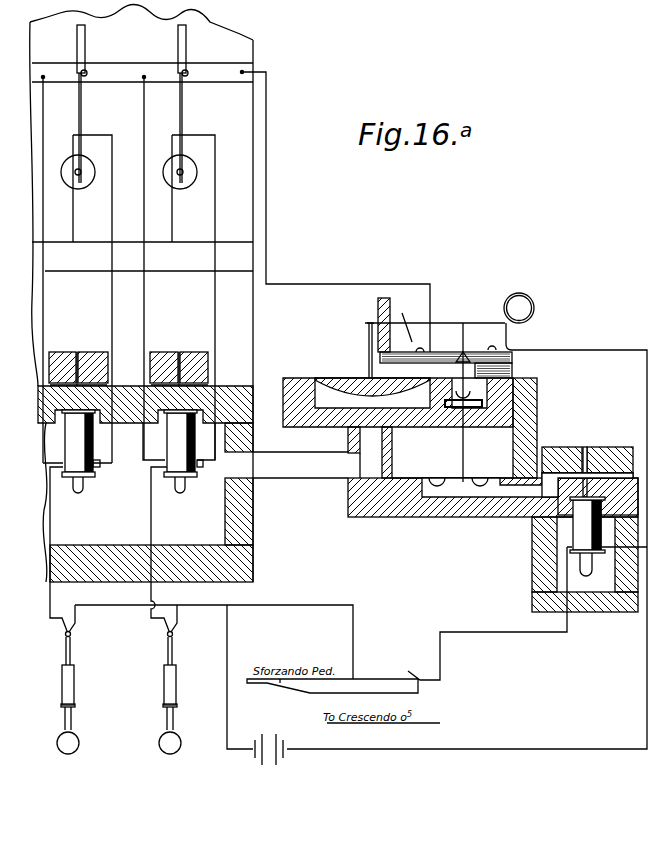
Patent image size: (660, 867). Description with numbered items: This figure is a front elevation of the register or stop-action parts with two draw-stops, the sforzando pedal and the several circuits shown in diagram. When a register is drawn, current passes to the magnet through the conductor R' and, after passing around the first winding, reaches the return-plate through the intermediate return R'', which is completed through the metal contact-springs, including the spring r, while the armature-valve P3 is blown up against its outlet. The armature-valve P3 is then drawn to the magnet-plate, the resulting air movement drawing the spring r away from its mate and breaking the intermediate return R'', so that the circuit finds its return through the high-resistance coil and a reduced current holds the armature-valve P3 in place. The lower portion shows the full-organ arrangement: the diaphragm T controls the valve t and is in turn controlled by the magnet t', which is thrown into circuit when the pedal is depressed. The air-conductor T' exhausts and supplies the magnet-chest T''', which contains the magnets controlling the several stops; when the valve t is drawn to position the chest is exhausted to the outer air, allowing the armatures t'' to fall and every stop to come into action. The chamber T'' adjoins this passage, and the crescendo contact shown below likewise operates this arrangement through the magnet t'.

The contact-spring r is at (82, 131).
The armature-valve P3 is at (88, 383).
The intermediate return R'' is at (149, 366).
The conductor R' is at (127, 411).
The solenoid chamber T'' is at (148, 496).
The air-conductor T' is at (300, 465).
The magnet-chest T''' is at (449, 332).
The diaphragm T is at (460, 447).
The valve t is at (454, 402).
The armatures t'' is at (587, 462).
The magnet t' is at (589, 542).